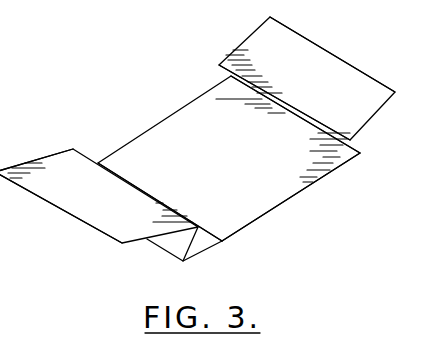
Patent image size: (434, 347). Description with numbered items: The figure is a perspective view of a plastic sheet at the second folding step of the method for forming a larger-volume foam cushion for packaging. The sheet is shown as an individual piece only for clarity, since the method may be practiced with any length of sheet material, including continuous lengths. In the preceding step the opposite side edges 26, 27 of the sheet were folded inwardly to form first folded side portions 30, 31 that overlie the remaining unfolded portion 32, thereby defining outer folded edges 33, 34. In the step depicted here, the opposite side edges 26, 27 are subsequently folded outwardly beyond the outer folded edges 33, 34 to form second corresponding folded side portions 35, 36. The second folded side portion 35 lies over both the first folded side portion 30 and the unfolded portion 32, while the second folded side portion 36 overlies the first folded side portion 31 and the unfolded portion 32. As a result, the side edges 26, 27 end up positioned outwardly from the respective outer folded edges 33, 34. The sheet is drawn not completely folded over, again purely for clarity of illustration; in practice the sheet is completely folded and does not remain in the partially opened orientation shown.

The side edge 26 is at (340, 57).
The side edge 27 is at (63, 214).
The folded side portion 30 is at (185, 241).
The folded side portion 31 is at (226, 72).
The unfolded portion 32 is at (211, 164).
The outer folded edge 33 is at (360, 153).
The outer folded edge 34 is at (163, 253).
The second folded side portion 35 is at (86, 208).
The second folded side portion 36 is at (343, 103).